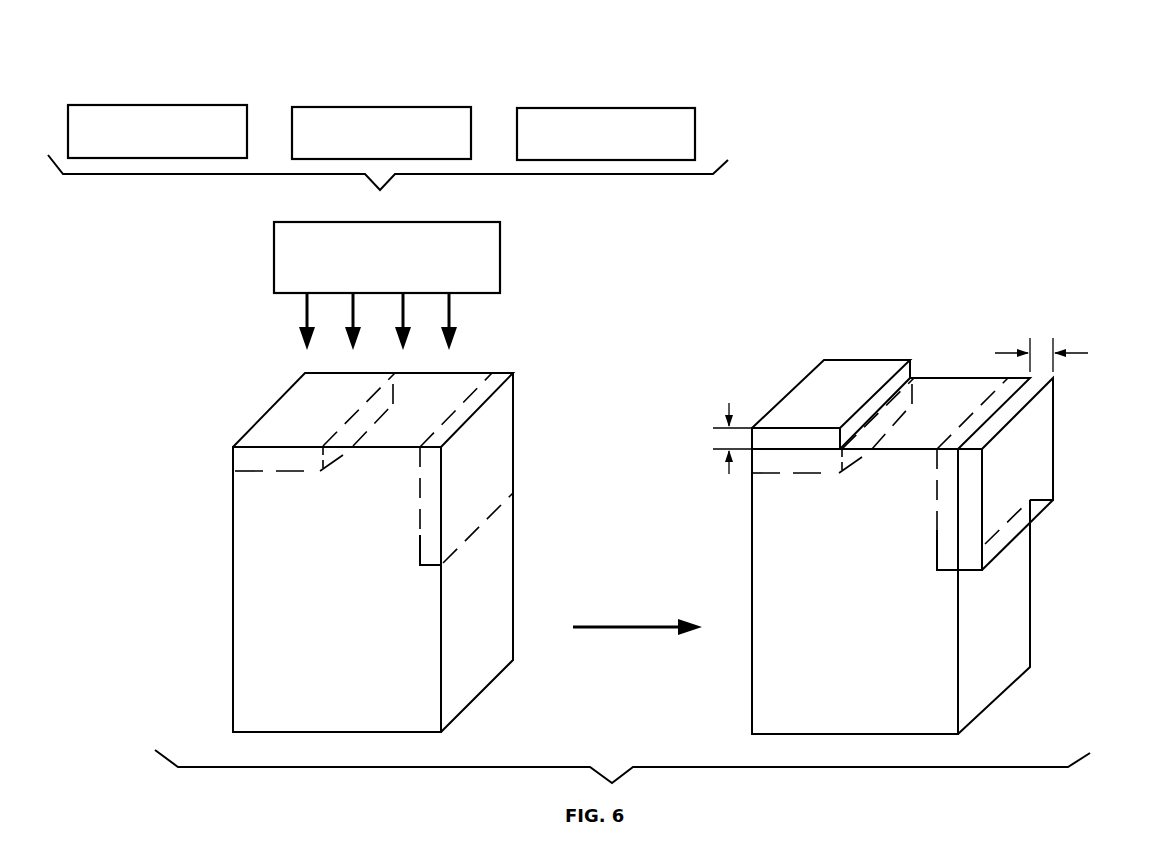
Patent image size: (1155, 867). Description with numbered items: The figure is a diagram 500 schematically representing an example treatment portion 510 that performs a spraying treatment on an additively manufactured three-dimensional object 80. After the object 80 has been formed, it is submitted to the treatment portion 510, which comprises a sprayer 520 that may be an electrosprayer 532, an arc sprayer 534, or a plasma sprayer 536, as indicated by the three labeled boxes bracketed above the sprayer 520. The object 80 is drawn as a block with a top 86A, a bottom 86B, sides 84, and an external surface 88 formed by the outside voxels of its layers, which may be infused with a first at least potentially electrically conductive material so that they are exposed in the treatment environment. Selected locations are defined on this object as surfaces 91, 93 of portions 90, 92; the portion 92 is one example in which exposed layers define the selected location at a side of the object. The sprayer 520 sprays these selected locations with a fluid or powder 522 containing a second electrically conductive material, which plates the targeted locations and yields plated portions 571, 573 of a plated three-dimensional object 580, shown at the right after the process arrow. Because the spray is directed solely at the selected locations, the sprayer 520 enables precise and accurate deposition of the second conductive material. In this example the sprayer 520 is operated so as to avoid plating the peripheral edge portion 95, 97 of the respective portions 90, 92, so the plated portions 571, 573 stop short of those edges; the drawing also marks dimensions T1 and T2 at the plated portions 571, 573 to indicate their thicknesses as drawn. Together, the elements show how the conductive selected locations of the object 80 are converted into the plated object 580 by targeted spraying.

The diagram 500 is at (864, 113).
The treatment portion 510 is at (576, 291).
The sprayer 520 is at (272, 254).
The fluid or powder 522 is at (306, 318).
The electrosprayer 532 is at (138, 104).
The arc sprayer 534 is at (338, 106).
The plasma sprayer 536 is at (553, 106).
The 3D object 80 is at (278, 636).
The sides 84 is at (692, 665).
The top 86A is at (443, 390).
The bottom 86B is at (458, 714).
The external surface 88 is at (514, 592).
The portion 90 is at (279, 477).
The surface 91 is at (783, 505).
The portion 92 is at (417, 536).
The surface 93 is at (962, 523).
The peripheral edge portion 95 is at (768, 466).
The peripheral edge portion 97 is at (983, 408).
The plated portion 571 is at (883, 356).
The plated portion 573 is at (1057, 442).
The plated 3D object 580 is at (777, 660).
The top coating thickness T1 is at (719, 438).
The side coating thickness T2 is at (1041, 345).